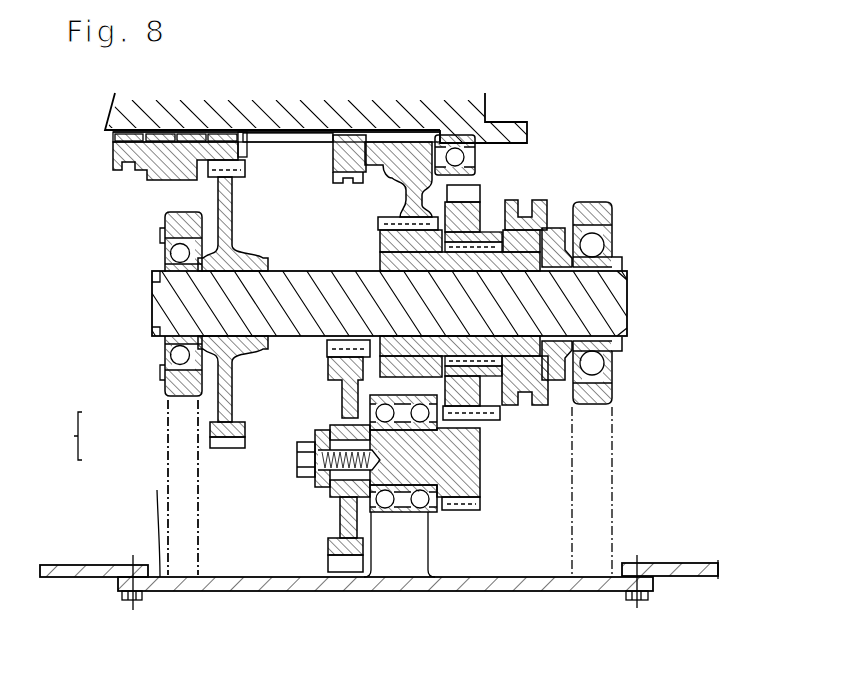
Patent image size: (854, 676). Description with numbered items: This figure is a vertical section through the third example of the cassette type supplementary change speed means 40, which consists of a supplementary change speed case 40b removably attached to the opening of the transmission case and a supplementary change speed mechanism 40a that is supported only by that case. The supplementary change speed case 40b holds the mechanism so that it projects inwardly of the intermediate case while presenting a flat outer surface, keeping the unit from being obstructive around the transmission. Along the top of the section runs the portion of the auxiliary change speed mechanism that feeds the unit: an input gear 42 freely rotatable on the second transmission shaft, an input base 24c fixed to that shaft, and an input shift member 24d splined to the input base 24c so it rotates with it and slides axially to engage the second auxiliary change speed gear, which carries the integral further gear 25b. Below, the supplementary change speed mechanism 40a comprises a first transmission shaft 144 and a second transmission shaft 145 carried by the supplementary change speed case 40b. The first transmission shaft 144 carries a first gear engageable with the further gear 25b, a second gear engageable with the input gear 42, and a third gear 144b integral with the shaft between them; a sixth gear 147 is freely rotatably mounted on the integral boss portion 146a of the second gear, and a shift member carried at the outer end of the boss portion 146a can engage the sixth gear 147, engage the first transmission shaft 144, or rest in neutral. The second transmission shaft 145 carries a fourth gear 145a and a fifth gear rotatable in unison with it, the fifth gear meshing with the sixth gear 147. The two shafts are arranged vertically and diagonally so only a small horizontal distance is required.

The further gear 25b is at (246, 157).
The input base 24c is at (335, 162).
The input shift member 24d is at (358, 184).
The input gear 42 is at (392, 176).
The sixth gear 147 is at (462, 192).
The integral boss portion 146a is at (542, 198).
The first transmission shaft 144 is at (152, 295).
The third gear 144b is at (378, 222).
The second transmission shaft 145 is at (450, 467).
The fourth gear 145a is at (347, 563).
The supplementary change speed means 40 is at (62, 436).
The supplementary change speed mechanism 40a is at (147, 409).
The supplementary change speed case 40b is at (157, 490).